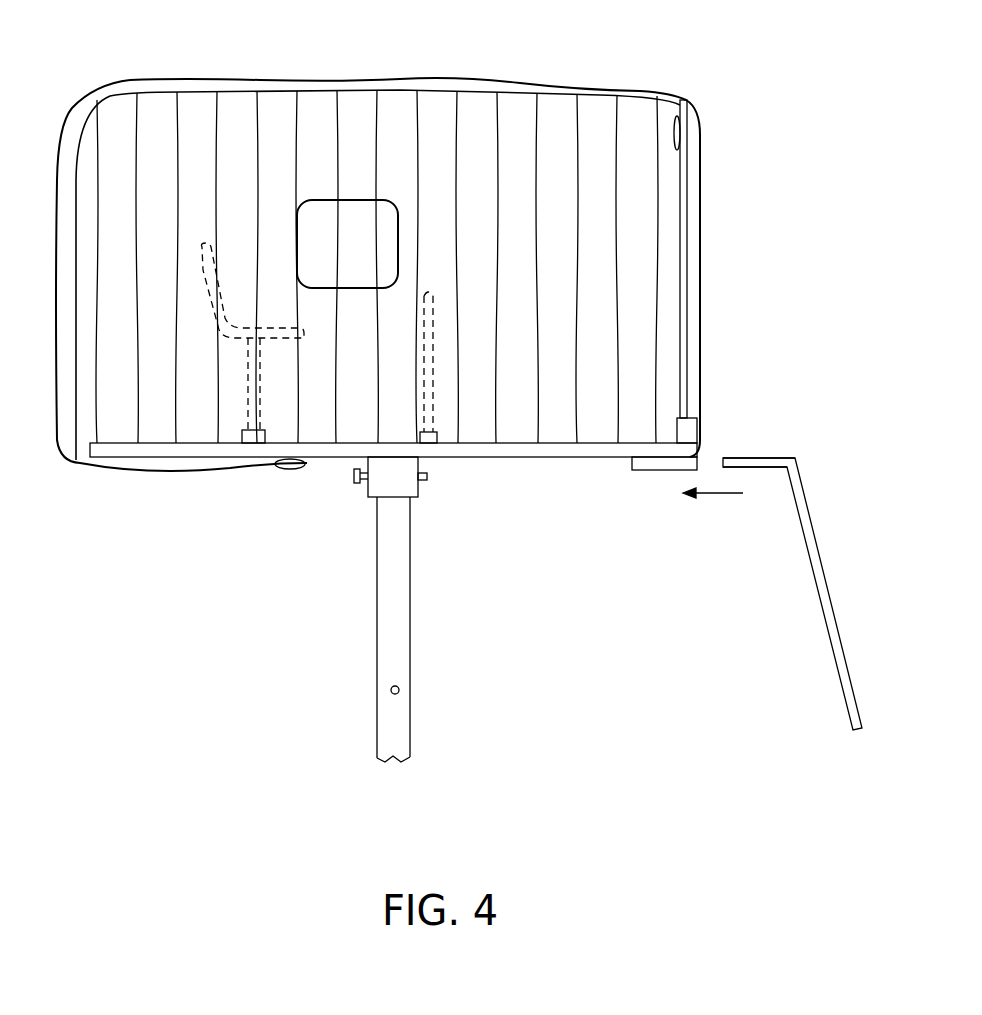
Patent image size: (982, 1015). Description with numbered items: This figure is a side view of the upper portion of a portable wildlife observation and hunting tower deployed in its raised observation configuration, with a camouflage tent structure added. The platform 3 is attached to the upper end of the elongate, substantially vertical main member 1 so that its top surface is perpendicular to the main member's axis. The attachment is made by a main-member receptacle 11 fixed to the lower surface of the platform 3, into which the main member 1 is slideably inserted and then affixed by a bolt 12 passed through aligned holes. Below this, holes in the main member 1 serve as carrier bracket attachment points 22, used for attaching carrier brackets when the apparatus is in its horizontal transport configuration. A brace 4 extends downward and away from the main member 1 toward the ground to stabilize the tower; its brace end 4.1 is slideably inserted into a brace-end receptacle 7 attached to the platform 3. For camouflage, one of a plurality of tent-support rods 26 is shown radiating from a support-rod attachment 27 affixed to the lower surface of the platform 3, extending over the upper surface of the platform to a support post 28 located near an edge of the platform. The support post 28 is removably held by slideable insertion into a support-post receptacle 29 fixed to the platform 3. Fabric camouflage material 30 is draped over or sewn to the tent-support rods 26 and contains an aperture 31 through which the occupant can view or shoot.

The main member 1 is at (410, 608).
The platform 3 is at (533, 457).
The brace 4 is at (822, 563).
The brace end 4.1 is at (782, 458).
The brace-end receptacle 7 is at (648, 470).
The main-member receptacle 11 is at (418, 493).
The bolt 12 is at (356, 483).
The carrier bracket attachment points 22 is at (399, 691).
The tent-support rods 26 is at (352, 80).
The support-rod attachment 27 is at (283, 468).
The support post 28 is at (690, 137).
The support-post receptacle 29 is at (692, 427).
The fabric camouflage material 30 is at (160, 80).
The aperture 31 is at (347, 244).